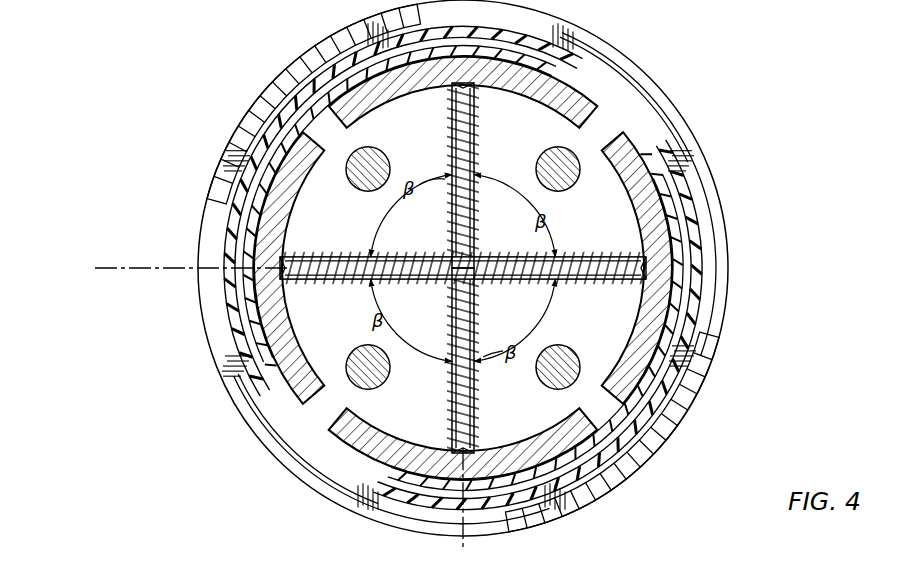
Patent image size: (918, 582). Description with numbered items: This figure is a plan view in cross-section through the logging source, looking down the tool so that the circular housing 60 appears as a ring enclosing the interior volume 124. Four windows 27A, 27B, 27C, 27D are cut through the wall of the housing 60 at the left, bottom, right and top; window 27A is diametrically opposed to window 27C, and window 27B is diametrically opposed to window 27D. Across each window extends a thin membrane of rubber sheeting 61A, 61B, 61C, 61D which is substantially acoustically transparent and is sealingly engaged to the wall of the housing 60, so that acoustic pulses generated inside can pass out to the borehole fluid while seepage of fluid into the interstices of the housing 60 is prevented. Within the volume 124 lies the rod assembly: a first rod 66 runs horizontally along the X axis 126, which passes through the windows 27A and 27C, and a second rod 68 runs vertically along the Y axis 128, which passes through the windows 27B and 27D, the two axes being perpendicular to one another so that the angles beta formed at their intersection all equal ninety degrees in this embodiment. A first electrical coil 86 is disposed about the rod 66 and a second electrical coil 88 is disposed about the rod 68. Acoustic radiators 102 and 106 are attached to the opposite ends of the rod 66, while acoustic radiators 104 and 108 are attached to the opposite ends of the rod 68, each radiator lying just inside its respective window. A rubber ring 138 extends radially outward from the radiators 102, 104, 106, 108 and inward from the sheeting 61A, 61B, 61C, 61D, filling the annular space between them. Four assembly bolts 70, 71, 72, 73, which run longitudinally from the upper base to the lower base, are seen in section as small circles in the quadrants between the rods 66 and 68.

The housing 60 is at (431, 268).
The rubber sheeting 61A is at (248, 325).
The rubber sheeting 61B is at (400, 492).
The rubber sheeting 61C is at (676, 258).
The rubber sheeting 61D is at (472, 94).
The window 27A is at (177, 271).
The window 27B is at (422, 511).
The window 27C is at (732, 258).
The window 27D is at (501, 26).
The first rod 66 is at (463, 248).
The second rod 68 is at (477, 175).
The second electrical coil 88 is at (478, 360).
The first electrical coil 86 is at (538, 291).
The assembly bolt 70 is at (286, 139).
The assembly bolt 71 is at (377, 382).
The assembly bolt 72 is at (541, 382).
The assembly bolt 73 is at (643, 148).
The acoustic radiator 102 is at (241, 294).
The acoustic radiator 104 is at (528, 444).
The acoustic radiator 106 is at (691, 268).
The acoustic radiator 108 is at (404, 83).
The volume 124 is at (598, 319).
The rubber ring 138 is at (490, 268).
The X axis 126 is at (174, 288).
The Y axis 128 is at (547, 497).